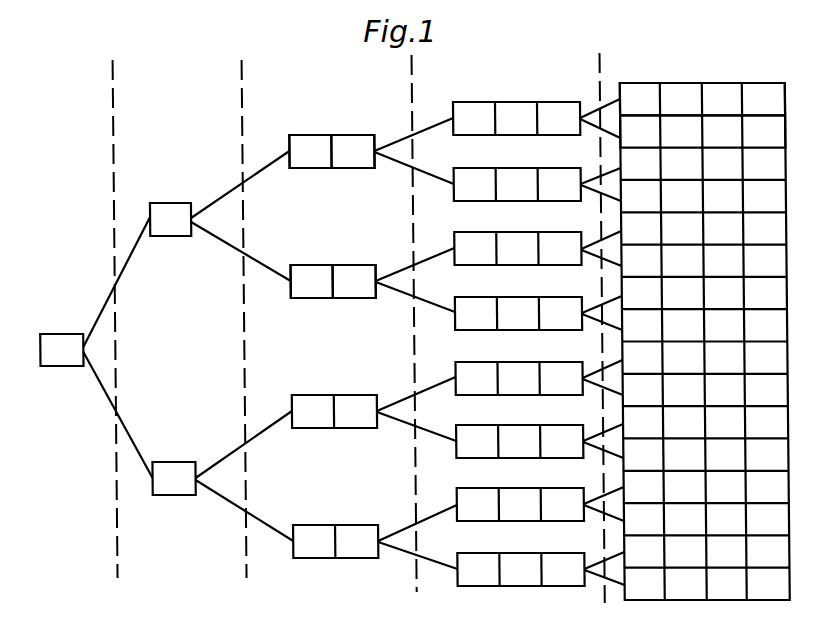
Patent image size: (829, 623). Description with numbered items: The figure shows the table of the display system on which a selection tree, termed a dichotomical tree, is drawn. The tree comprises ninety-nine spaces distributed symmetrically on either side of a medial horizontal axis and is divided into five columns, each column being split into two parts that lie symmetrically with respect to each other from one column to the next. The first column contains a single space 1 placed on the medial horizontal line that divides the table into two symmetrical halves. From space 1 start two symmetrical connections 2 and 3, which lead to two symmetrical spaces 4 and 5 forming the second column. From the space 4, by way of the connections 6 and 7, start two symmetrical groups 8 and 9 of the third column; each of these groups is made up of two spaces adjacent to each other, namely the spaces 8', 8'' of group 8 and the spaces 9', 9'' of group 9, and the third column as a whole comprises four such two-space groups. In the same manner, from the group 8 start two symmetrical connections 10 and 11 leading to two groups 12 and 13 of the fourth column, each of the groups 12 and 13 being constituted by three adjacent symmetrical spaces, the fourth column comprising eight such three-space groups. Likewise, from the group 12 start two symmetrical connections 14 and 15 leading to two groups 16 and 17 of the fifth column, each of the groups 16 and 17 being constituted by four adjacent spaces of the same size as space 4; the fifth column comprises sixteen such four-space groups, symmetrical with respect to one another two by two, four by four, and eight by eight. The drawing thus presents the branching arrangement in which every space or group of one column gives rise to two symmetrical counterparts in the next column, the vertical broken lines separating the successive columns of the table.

The space 1 is at (61, 334).
The connection 2 is at (116, 287).
The connection 3 is at (121, 427).
The space 4 is at (168, 203).
The space 5 is at (178, 462).
The connection 6 is at (250, 179).
The connection 7 is at (261, 264).
The group of two spaces 8 is at (332, 151).
The space 8' is at (310, 131).
The space 8'' is at (353, 130).
The group of two spaces 9 is at (333, 281).
The space 9' is at (311, 261).
The space 9'' is at (354, 261).
The connection 10 is at (437, 127).
The connection 11 is at (439, 178).
The group of three spaces 12 is at (507, 101).
The group of three spaces 13 is at (510, 167).
The connection 14 is at (588, 110).
The connection 15 is at (593, 126).
The group of four spaces 16 is at (617, 89).
The group of four spaces 17 is at (618, 140).